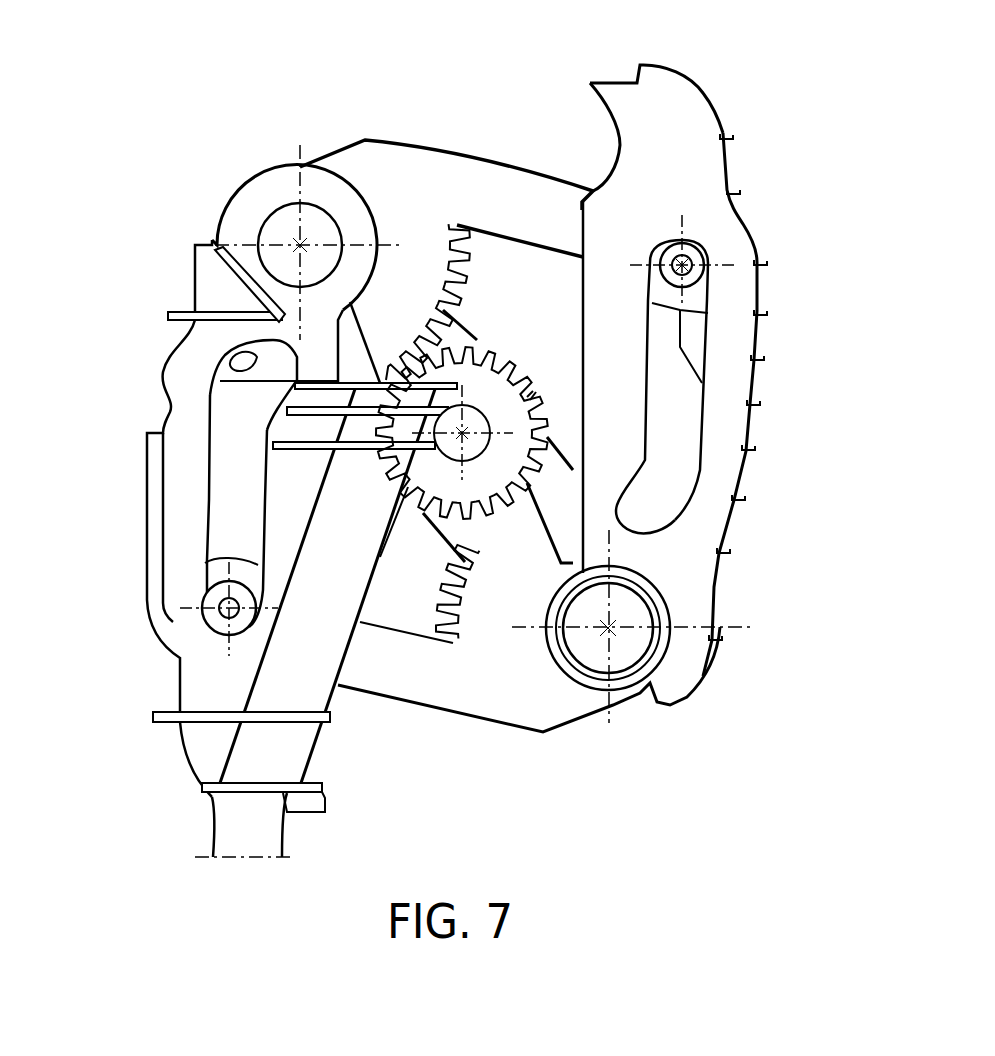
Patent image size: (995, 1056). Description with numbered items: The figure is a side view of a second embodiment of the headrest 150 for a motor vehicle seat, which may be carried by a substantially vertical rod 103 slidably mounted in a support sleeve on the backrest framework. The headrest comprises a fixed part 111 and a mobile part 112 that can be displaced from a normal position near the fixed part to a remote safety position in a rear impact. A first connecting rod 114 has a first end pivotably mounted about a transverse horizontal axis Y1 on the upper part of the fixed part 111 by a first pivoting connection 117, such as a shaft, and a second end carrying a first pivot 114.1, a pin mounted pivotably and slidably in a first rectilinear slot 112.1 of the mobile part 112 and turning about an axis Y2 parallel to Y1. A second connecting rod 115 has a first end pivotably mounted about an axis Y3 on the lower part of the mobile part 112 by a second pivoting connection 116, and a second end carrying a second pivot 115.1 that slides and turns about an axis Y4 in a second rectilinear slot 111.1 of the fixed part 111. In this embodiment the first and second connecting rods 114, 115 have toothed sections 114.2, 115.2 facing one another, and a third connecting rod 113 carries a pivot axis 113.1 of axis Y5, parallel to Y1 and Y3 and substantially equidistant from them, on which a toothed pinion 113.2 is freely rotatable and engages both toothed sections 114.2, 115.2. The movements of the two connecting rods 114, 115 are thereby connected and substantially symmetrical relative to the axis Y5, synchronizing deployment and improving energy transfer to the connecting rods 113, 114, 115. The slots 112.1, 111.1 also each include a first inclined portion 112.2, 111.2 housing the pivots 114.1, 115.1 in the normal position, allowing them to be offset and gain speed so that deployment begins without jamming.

The headrest 150 is at (146, 98).
The rod 103 is at (243, 823).
The fixed part 111 is at (176, 766).
The second rectilinear slot 111.1 is at (212, 458).
The first inclined portion of the second slot 111.2 is at (243, 376).
The mobile part 112 is at (735, 102).
The first rectilinear slot 112.1 is at (690, 432).
The first inclined portion of the first slot 112.2 is at (663, 517).
The third connecting rod 113 is at (558, 444).
The pivot axis 113.1 is at (533, 400).
The toothed pinion 113.2 is at (533, 396).
The first connecting rod 114 is at (479, 145).
The first pivot 114.1 is at (685, 237).
The toothed section of the first connecting rod 114.2 is at (423, 237).
The second connecting rod 115 is at (566, 736).
The second pivot 115.1 is at (208, 592).
The toothed section of the second connecting rod 115.2 is at (500, 603).
The second pivoting connection 116 is at (648, 608).
The first pivoting connection 117 is at (297, 200).
The transverse horizontal axis Y1 is at (300, 245).
The axis of the first pivot Y2 is at (683, 263).
The axis of the second pivoting connection Y3 is at (610, 628).
The axis of the second pivot Y4 is at (229, 608).
The axis of the pivot axis Y5 is at (463, 432).